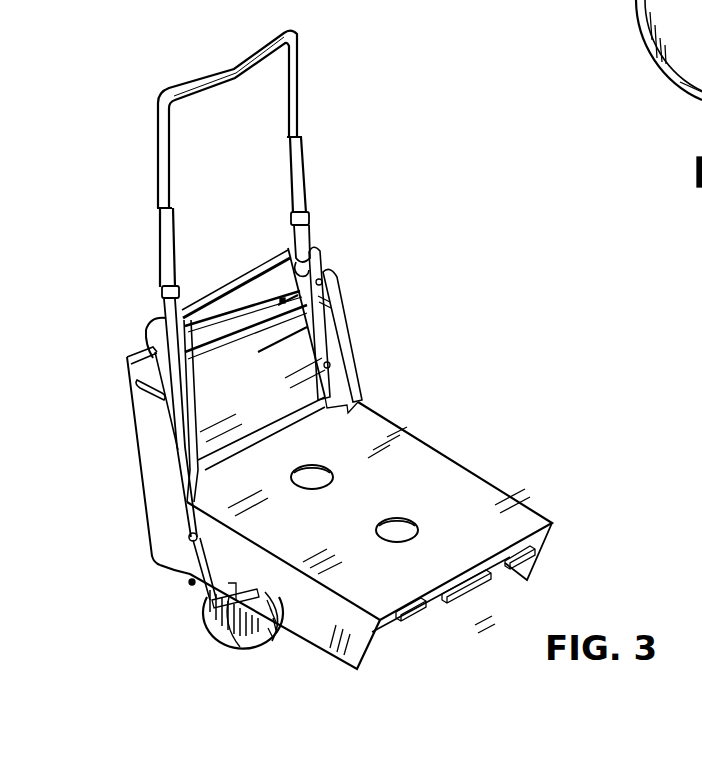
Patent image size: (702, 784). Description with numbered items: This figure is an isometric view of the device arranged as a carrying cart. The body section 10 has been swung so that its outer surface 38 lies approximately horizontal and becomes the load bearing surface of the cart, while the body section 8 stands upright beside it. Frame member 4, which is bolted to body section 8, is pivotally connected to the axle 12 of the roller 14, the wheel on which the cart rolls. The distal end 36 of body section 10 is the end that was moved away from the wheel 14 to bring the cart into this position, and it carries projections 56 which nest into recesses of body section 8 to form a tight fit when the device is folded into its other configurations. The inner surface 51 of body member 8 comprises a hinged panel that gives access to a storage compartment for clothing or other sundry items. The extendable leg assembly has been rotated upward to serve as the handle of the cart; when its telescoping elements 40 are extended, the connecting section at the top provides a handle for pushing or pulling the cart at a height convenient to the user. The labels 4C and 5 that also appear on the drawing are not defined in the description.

The frame member 4 is at (227, 277).
The handle 4C is at (187, 84).
The hole / section line 5- 5 is at (403, 535).
The body section 8 is at (150, 516).
The body section 10 is at (398, 423).
The axle 12 is at (227, 650).
The roller 14 is at (262, 650).
The distal end 36 is at (537, 537).
The outer surface 38 is at (330, 532).
The telescoping elements 40 is at (159, 198).
The inner surface 51 is at (298, 387).
The projections 56 is at (458, 601).